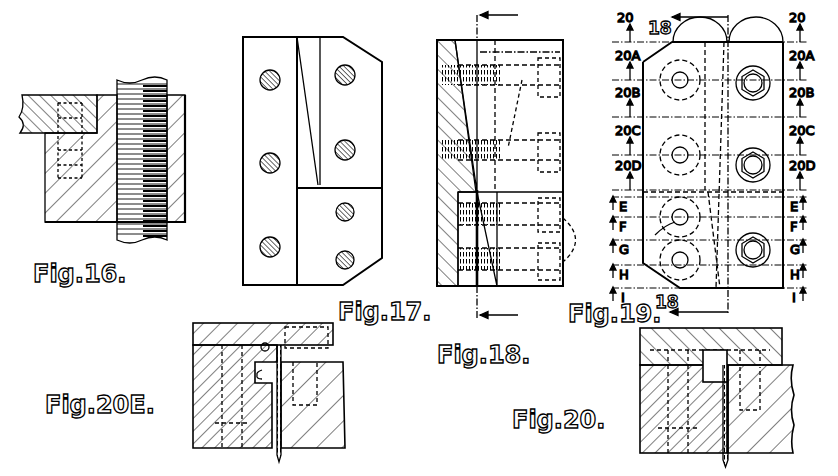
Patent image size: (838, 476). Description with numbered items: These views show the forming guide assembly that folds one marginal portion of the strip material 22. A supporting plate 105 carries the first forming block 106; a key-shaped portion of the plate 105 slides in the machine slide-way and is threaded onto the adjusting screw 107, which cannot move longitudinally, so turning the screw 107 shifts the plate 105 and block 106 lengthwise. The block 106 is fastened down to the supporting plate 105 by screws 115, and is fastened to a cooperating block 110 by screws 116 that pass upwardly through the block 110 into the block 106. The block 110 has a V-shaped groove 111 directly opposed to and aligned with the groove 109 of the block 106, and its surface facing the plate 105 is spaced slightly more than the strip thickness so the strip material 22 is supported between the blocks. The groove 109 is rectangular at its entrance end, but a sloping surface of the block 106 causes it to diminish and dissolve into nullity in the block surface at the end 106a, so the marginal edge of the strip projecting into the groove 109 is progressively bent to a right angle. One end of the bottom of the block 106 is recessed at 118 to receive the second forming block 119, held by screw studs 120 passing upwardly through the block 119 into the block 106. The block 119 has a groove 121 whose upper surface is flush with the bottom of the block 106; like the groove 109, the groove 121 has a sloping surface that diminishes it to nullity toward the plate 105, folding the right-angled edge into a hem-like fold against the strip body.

In FIG. 20E, the strip material 22 is at (283, 458).
In FIG. 20, the strip material 22 is at (725, 460).
In FIG. 16, the supporting plate 105 is at (58, 197).
In FIG. 20E, the supporting plate 105 is at (335, 380).
In FIG. 20, the supporting plate 105 is at (772, 432).
In FIG. 16, the forming block 106 is at (32, 107).
In FIG. 17, the forming block 106 is at (368, 88).
In FIG. 18, the forming block 106 is at (447, 115).
In FIG. 20E, the forming block 106 is at (208, 330).
In FIG. 20, the forming block 106 is at (655, 333).
In FIG. 17, the end of block 106 106a is at (319, 189).
In FIG. 18, the end of block 106 106a is at (478, 191).
In FIG. 19, the end of block 106 106a is at (703, 191).
In FIG. 16, the threaded adjusting screw 107 is at (140, 100).
In FIG. 17, the groove 109 is at (300, 113).
In FIG. 18, the groove 109 is at (468, 52).
In FIG. 19, the groove 109 is at (710, 93).
In FIG. 20, the groove 109 is at (712, 356).
In FIG. 17, the cooperating block 110 is at (253, 133).
In FIG. 18, the cooperating block 110 is at (552, 50).
In FIG. 20, the cooperating block 110 is at (660, 385).
In FIG. 18, the V-shaped groove 111 is at (520, 53).
In FIG. 20, the V-shaped groove 111 is at (705, 378).
In FIG. 16, the screws 115 is at (60, 150).
In FIG. 17, the screws 115 is at (260, 80).
In FIG. 19, the screws 115 is at (758, 84).
In FIG. 20E, the screws 115 is at (333, 337).
In FIG. 20, the screws 115 is at (772, 378).
In FIG. 17, the screws 116 is at (345, 66).
In FIG. 18, the screws 116 is at (500, 115).
In FIG. 19, the screws 116 is at (683, 79).
In FIG. 20, the screws 116 is at (670, 450).
In FIG. 17, the recess 118 is at (367, 197).
In FIG. 18, the recess 118 is at (462, 238).
In FIG. 20E, the recess 118 is at (266, 342).
In FIG. 18, the second forming block 119 is at (518, 278).
In FIG. 19, the second forming block 119 is at (736, 280).
In FIG. 20E, the second forming block 119 is at (200, 412).
In FIG. 17, the screw studs 120 is at (345, 222).
In FIG. 18, the screw studs 120 is at (527, 239).
In FIG. 19, the screw studs 120 is at (683, 262).
In FIG. 20E, the screw studs 120 is at (222, 452).
In FIG. 18, the groove 121 is at (493, 233).
In FIG. 19, the groove 121 is at (715, 206).
In FIG. 20E, the groove 121 is at (258, 375).